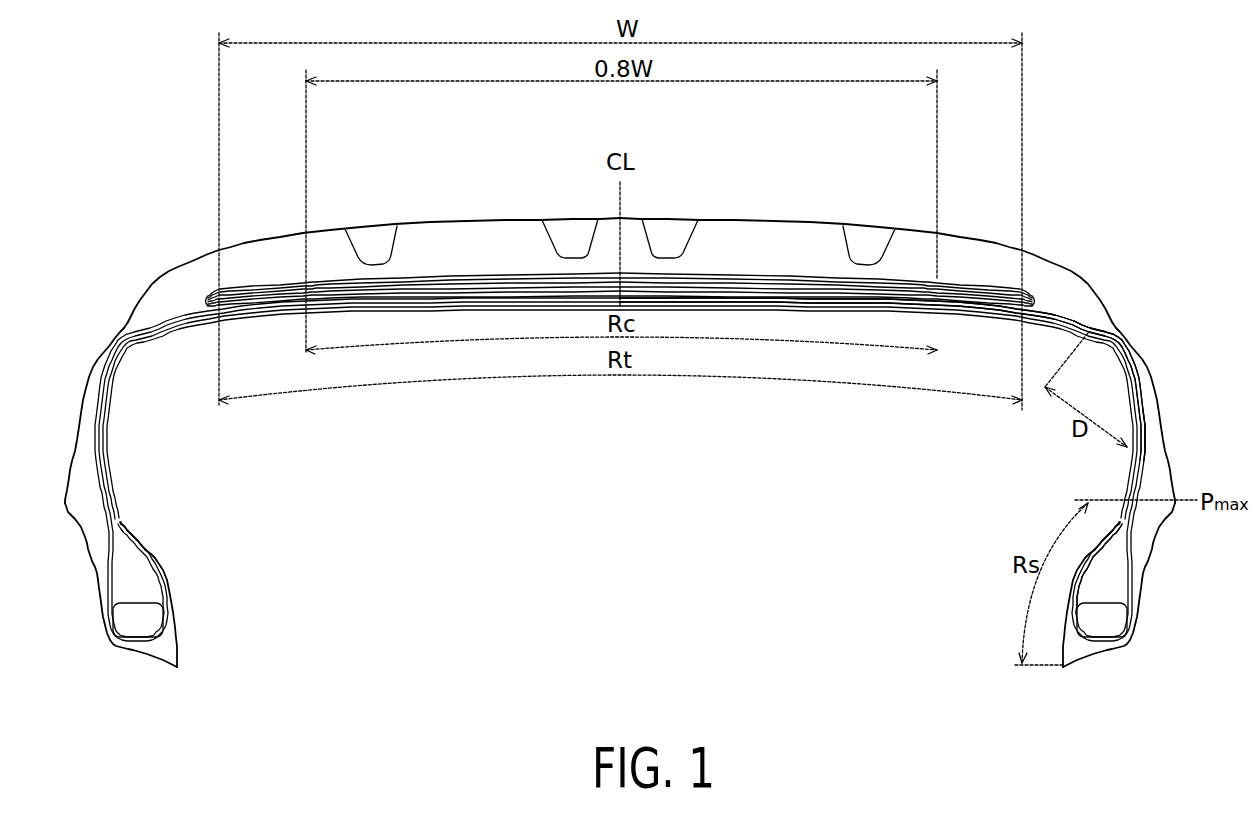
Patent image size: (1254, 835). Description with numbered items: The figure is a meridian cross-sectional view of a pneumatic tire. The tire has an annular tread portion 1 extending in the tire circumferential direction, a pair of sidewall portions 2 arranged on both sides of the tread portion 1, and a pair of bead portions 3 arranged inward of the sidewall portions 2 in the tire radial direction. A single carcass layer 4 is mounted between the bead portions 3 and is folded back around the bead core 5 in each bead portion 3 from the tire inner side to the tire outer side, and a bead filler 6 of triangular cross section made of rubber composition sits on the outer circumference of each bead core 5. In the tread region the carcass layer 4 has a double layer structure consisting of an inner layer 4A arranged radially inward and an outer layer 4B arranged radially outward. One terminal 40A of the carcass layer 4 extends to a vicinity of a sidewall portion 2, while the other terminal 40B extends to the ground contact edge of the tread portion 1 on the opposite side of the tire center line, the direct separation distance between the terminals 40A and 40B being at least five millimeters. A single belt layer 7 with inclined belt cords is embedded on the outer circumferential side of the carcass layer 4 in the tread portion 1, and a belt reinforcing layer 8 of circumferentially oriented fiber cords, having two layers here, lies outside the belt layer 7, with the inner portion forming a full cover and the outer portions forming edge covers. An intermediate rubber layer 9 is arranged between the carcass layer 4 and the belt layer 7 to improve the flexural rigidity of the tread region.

The tread portion 1 is at (744, 205).
The sidewall portion 2 is at (1197, 432).
The bead portion 3 is at (1155, 610).
The carcass layer 4 is at (1184, 240).
The inner layer 4A is at (1043, 312).
The outer layer 4B is at (1040, 307).
The terminal 40A is at (1137, 430).
The terminal 40B is at (1088, 337).
The bead core 5 is at (1113, 647).
The bead filler 6 is at (1110, 570).
The belt layer 7 is at (820, 283).
The belt reinforcing layer 8 is at (1000, 287).
The intermediate rubber layer 9 is at (672, 280).